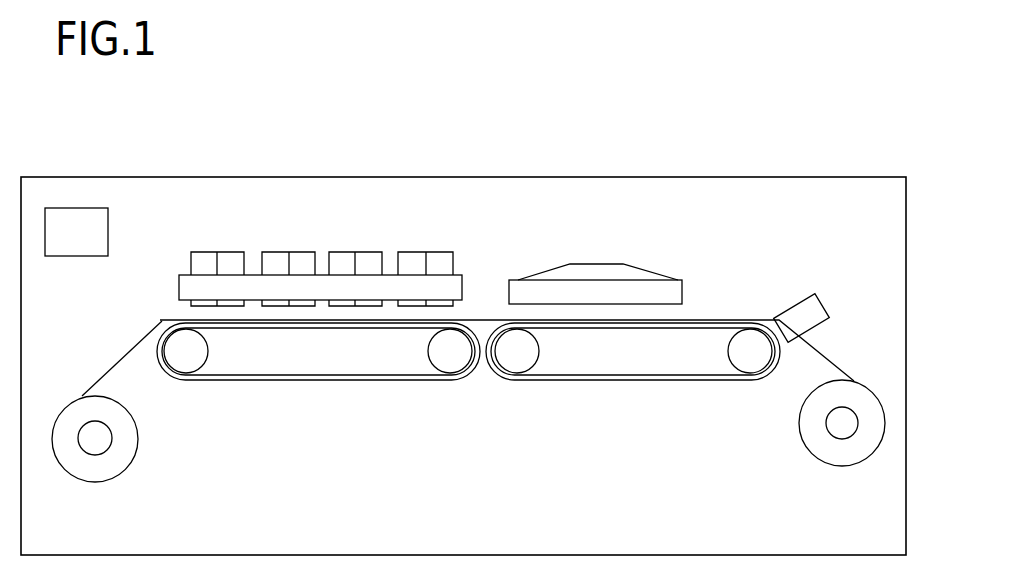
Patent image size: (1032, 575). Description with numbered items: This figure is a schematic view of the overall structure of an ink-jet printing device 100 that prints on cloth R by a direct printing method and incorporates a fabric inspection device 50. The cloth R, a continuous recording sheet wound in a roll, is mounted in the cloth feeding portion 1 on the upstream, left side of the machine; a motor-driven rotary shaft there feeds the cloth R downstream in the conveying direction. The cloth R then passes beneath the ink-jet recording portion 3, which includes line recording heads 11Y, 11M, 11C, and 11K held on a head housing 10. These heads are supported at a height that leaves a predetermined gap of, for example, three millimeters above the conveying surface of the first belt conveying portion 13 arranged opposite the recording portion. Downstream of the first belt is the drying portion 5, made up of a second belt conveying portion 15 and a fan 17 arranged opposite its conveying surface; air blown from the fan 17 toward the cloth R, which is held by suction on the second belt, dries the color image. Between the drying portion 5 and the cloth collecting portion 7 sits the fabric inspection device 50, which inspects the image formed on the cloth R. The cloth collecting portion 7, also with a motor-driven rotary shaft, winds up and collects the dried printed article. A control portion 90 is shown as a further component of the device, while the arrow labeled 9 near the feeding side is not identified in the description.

The ink-jet printing device 100 is at (630, 157).
The control portion 90 is at (78, 213).
The ink-jet recording portion 3 is at (175, 260).
The head housing 10 is at (462, 287).
The line recording head 11Y is at (217, 252).
The line recording head 11M is at (289, 252).
The line recording head 11C is at (355, 252).
The line recording head 11K is at (426, 252).
The fan 17 is at (593, 293).
The drying portion 5 is at (688, 308).
The second belt conveying portion 15 is at (600, 392).
The first belt conveying portion 13 is at (352, 393).
The fabric inspection device 50 is at (803, 313).
The cloth R is at (808, 353).
The transport unit 9 is at (155, 392).
The cloth feeding portion 1 is at (104, 442).
The cloth collecting portion 7 is at (839, 428).